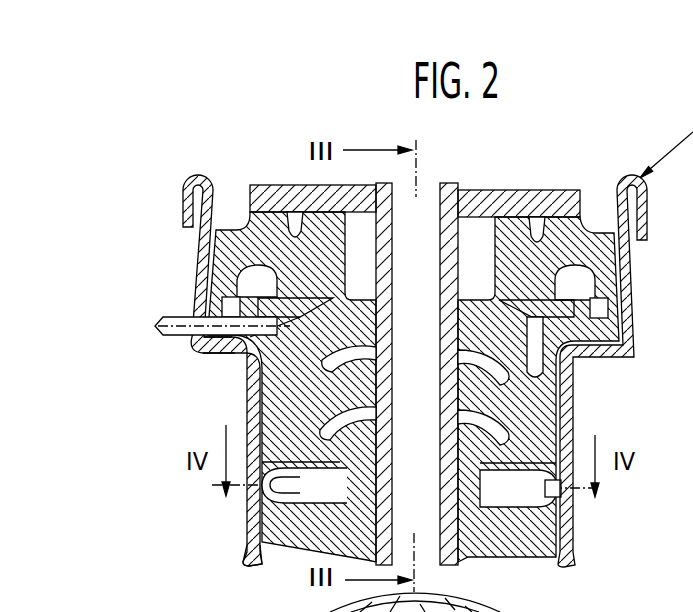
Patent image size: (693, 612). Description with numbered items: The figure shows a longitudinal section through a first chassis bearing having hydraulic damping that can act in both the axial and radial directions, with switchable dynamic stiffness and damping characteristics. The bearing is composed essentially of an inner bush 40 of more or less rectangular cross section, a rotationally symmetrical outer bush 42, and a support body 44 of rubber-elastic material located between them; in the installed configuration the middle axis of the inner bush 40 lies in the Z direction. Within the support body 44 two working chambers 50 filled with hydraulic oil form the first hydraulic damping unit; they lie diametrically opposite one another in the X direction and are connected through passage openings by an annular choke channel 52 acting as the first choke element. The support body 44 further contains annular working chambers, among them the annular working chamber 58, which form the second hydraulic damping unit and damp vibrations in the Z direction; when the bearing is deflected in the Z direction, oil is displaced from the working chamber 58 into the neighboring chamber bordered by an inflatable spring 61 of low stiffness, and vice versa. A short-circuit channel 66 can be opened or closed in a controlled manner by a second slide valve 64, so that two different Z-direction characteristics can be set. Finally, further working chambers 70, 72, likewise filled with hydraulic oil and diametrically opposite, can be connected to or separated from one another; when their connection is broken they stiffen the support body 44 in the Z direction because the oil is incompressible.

The inner bush 40 is at (250, 186).
The outer bush 42 is at (244, 532).
The support body 44 is at (493, 547).
The working chambers 50 is at (513, 515).
The annular choke channel 52 is at (216, 437).
The annular working chamber 58 is at (210, 246).
The inflatable spring 61 is at (240, 362).
The second slide valve 64 is at (172, 316).
The short-circuit channel 66 is at (246, 276).
The working chamber 70 is at (542, 376).
The working chamber 72 is at (240, 388).